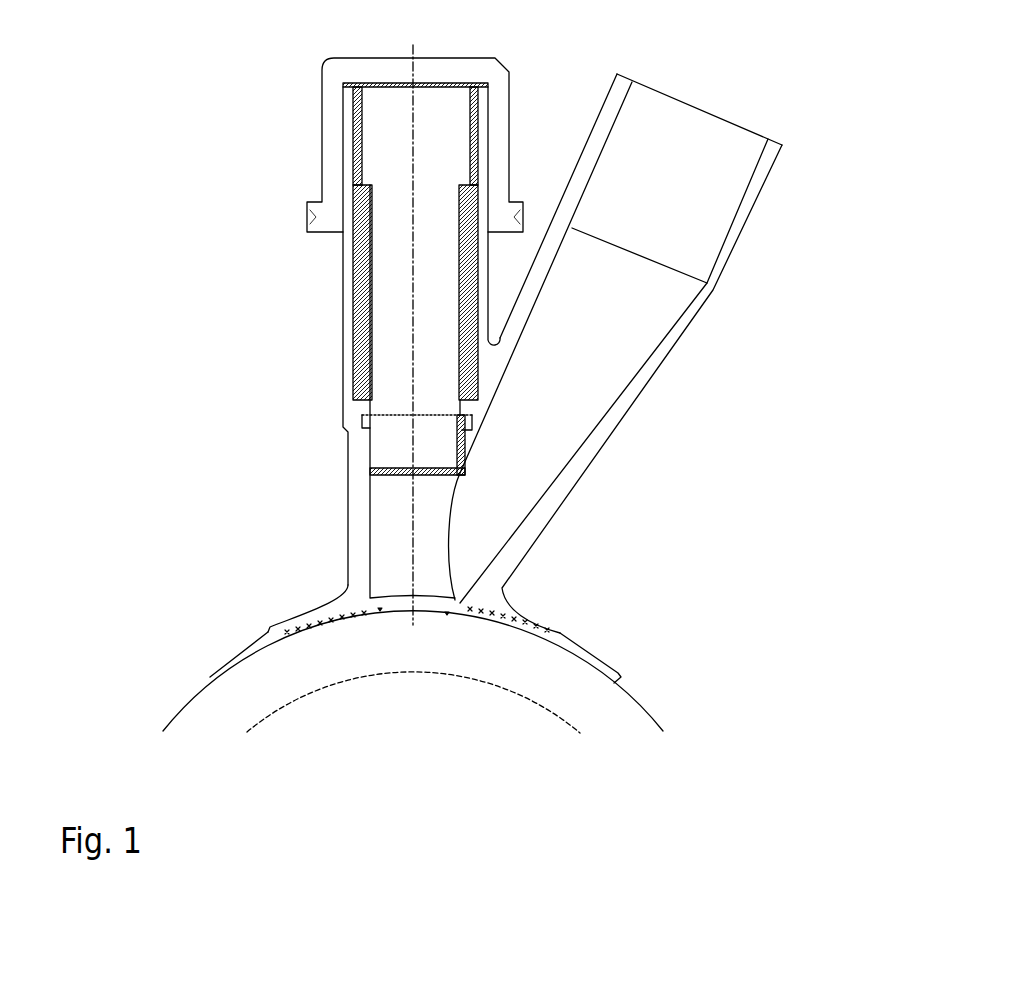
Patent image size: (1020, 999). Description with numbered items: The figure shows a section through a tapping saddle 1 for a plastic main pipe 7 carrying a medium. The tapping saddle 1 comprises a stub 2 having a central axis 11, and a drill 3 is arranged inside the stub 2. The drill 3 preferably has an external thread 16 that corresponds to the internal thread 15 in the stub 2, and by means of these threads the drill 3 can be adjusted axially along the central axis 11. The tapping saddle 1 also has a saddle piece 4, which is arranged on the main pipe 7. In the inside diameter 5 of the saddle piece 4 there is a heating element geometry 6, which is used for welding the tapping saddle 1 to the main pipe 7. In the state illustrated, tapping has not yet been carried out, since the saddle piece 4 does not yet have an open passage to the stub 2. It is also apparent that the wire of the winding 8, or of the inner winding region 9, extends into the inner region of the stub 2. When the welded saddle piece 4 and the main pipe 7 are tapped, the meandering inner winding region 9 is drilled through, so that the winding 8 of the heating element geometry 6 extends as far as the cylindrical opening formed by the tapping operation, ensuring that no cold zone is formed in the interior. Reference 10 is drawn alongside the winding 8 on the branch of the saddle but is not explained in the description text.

The tapping saddle 1 is at (262, 133).
The stub 2 is at (358, 485).
The drill 3 is at (400, 410).
The saddle piece 4 is at (358, 600).
The inside diameter 5 is at (325, 635).
The heating element geometry 6 is at (295, 625).
The main pipe 7 is at (270, 700).
The winding 8 is at (615, 337).
The inner winding region 9 is at (460, 605).
The outer wall of branch arm 10 is at (535, 625).
The central axis 11 is at (408, 345).
The internal thread 15 is at (353, 165).
The external thread 16 is at (474, 136).